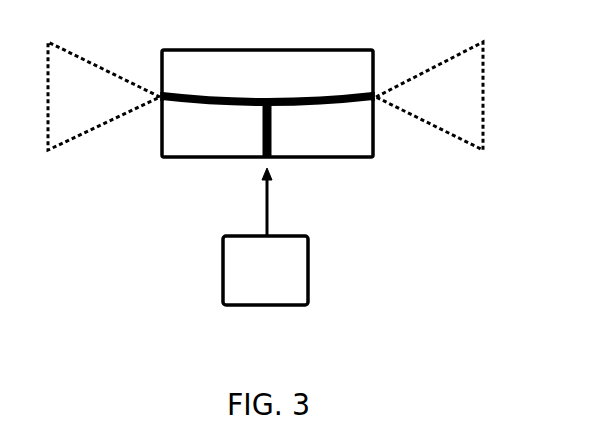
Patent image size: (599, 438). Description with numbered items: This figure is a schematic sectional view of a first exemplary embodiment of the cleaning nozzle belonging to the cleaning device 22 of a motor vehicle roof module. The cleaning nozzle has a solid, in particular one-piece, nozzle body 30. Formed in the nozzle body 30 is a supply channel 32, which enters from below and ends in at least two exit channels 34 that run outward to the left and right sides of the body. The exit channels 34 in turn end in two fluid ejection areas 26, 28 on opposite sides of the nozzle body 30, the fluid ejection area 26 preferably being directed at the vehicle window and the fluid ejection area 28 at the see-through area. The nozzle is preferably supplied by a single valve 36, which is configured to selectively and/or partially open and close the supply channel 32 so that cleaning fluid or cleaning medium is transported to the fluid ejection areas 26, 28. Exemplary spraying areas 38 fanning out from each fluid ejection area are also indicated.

The cleaning device 22 is at (178, 211).
The fluid ejection area 26 is at (160, 98).
The fluid ejection area 28 is at (376, 98).
The nozzle body 30 is at (293, 63).
The supply channel 32 is at (273, 138).
The exit channels 34 is at (345, 88).
The valve 36 is at (295, 290).
The spraying areas 38 is at (58, 62).